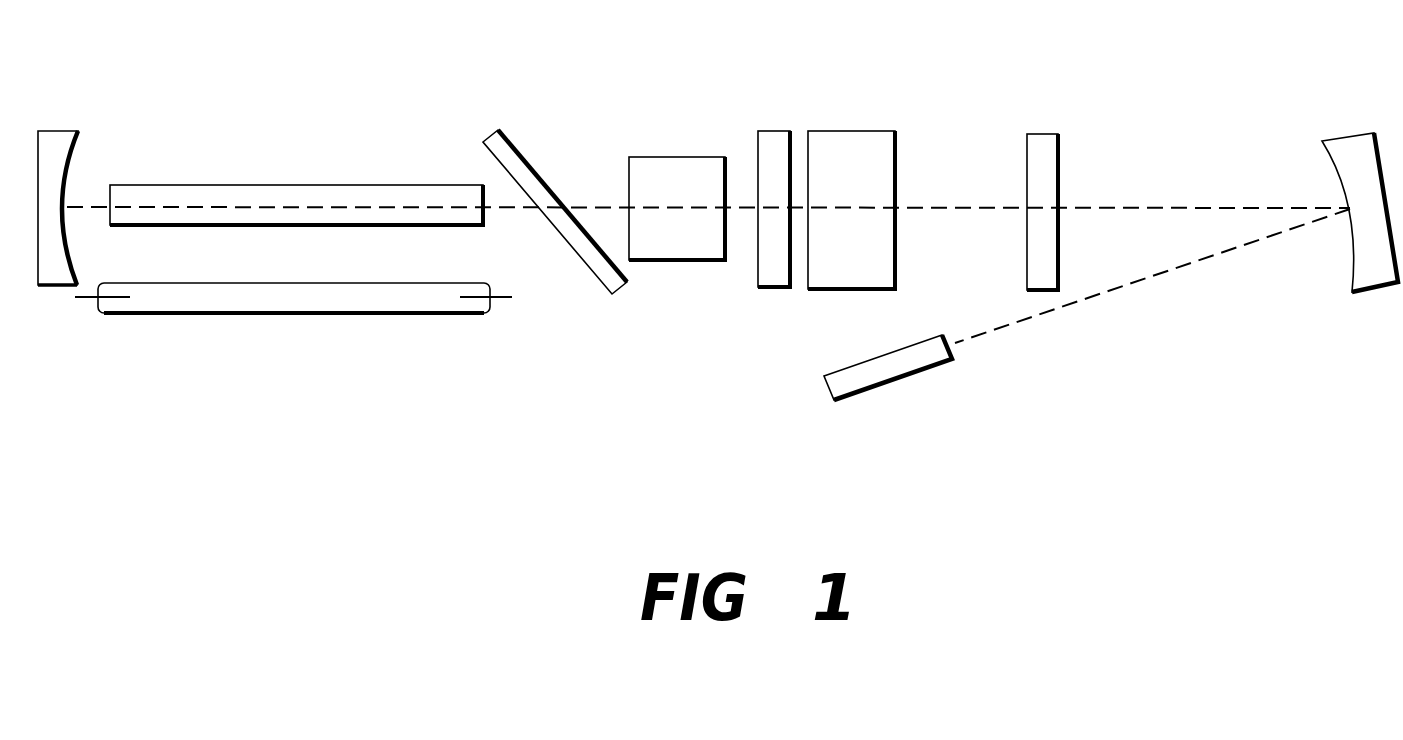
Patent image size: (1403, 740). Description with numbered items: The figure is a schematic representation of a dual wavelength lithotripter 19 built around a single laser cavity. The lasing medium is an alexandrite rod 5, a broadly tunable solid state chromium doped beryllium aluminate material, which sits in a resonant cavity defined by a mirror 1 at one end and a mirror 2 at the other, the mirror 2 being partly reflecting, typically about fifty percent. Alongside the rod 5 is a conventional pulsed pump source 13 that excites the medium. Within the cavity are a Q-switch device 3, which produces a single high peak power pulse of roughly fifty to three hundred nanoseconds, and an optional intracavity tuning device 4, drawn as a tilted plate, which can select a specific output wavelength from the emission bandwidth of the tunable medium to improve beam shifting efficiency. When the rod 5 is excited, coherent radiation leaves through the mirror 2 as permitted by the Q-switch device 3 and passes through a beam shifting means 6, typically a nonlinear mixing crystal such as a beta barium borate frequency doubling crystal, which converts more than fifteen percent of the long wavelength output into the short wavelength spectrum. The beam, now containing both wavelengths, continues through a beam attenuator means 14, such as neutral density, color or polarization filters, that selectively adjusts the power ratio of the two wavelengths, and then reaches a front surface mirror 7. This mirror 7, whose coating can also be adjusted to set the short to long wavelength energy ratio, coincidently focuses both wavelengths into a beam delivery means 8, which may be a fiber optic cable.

The mirror 1 is at (62, 131).
The dual wavelength lithotripter 19 is at (308, 101).
The alexandrite rod 5 is at (275, 185).
The pulsed pump source 13 is at (302, 313).
The intracavity tuning device 4 is at (515, 143).
The Q-switch device 3 is at (688, 157).
The mirror 2 is at (774, 131).
The beam shifting means 6 is at (855, 131).
The beam attenuator means 14 is at (1035, 134).
The front surface mirror 7 is at (1330, 141).
The beam delivery means 8 is at (905, 376).